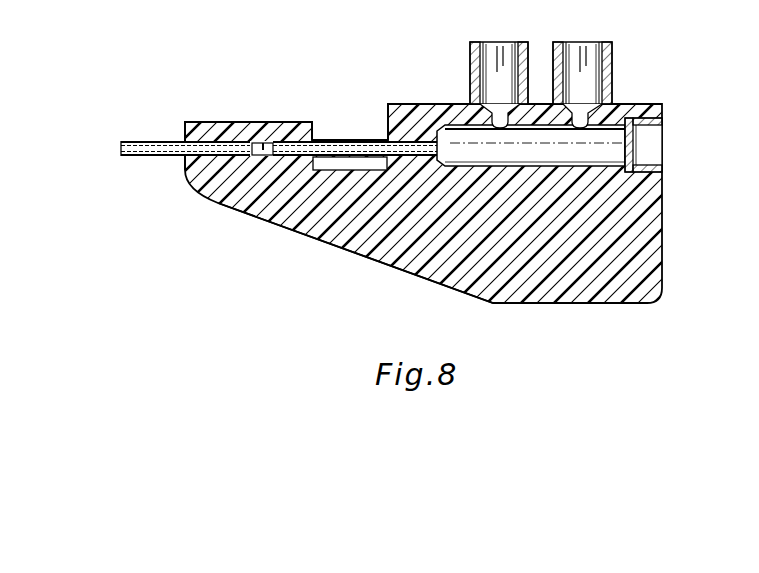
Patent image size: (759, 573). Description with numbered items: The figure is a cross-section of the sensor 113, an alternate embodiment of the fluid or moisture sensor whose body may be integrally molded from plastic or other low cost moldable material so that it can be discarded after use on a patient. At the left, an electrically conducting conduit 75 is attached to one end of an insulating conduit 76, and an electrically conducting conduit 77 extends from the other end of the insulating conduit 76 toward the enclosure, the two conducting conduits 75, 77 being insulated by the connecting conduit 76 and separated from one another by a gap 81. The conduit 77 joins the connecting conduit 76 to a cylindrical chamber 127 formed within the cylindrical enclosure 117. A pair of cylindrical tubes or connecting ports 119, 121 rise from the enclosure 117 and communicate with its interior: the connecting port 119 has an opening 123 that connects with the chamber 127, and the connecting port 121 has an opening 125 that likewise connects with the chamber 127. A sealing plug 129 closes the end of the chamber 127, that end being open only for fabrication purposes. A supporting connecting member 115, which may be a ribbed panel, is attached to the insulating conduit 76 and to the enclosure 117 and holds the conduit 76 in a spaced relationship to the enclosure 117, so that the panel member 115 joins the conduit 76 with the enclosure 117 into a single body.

The electrically conducting conduit 75 is at (157, 140).
The insulating conduit 76 is at (223, 122).
The electrically conducting conduit 77 is at (357, 140).
The gap 81 is at (264, 146).
The sensor 113 is at (297, 272).
The supporting connecting member 115 is at (433, 267).
The cylindrical enclosure 117 is at (416, 104).
The connecting port 119 is at (470, 67).
The connecting port 121 is at (612, 62).
The opening 123 is at (507, 52).
The opening 125 is at (592, 60).
The cylindrical chamber 127 is at (590, 155).
The sealing plug 129 is at (640, 150).